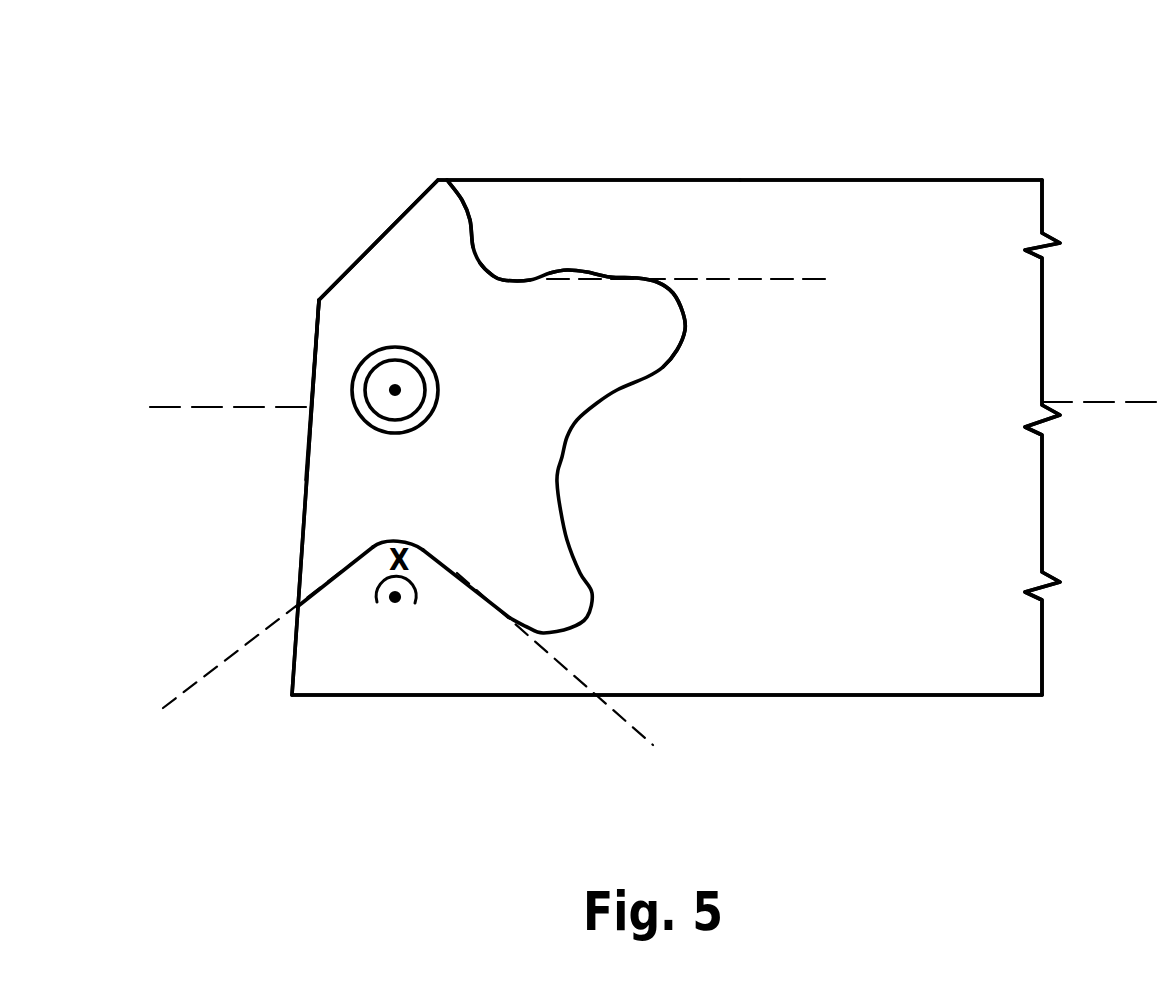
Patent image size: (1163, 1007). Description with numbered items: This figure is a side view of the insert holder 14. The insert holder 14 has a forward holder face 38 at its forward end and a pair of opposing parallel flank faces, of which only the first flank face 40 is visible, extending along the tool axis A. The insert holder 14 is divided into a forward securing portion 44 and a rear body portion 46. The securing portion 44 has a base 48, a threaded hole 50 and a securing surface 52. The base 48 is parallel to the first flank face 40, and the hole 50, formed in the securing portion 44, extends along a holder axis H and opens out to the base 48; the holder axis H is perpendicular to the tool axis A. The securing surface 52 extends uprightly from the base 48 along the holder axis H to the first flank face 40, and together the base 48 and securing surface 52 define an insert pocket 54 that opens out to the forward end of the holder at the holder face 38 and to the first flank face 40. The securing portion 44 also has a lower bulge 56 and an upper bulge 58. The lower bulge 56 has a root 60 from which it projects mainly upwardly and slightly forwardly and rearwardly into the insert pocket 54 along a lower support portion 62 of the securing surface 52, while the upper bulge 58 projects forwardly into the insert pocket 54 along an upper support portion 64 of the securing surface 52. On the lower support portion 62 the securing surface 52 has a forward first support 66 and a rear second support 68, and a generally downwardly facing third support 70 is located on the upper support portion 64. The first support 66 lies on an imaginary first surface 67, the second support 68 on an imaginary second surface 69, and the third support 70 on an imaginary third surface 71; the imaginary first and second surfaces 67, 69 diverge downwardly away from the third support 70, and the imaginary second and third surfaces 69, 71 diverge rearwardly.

The insert holder 14 is at (234, 128).
The holder face 38 is at (304, 477).
The first flank face 40 is at (1023, 327).
The securing portion 44 is at (482, 164).
The rear body portion 46 is at (789, 164).
The base 48 is at (340, 333).
The threaded hole 50 is at (375, 385).
The securing surface 52 is at (552, 484).
The insert pocket 54 is at (417, 284).
The lower bulge 56 is at (347, 653).
The upper bulge 58 is at (518, 218).
The root 60 is at (397, 652).
The lower support portion 62 is at (426, 534).
The upper support portion 64 is at (597, 286).
The first support 66 is at (375, 547).
The imaginary first surface 67 is at (220, 665).
The second support 68 is at (440, 557).
The imaginary second surface 69 is at (615, 713).
The third support 70 is at (516, 282).
The imaginary third surface 71 is at (728, 279).
The tool axis A is at (200, 412).
The holder axis H is at (400, 391).